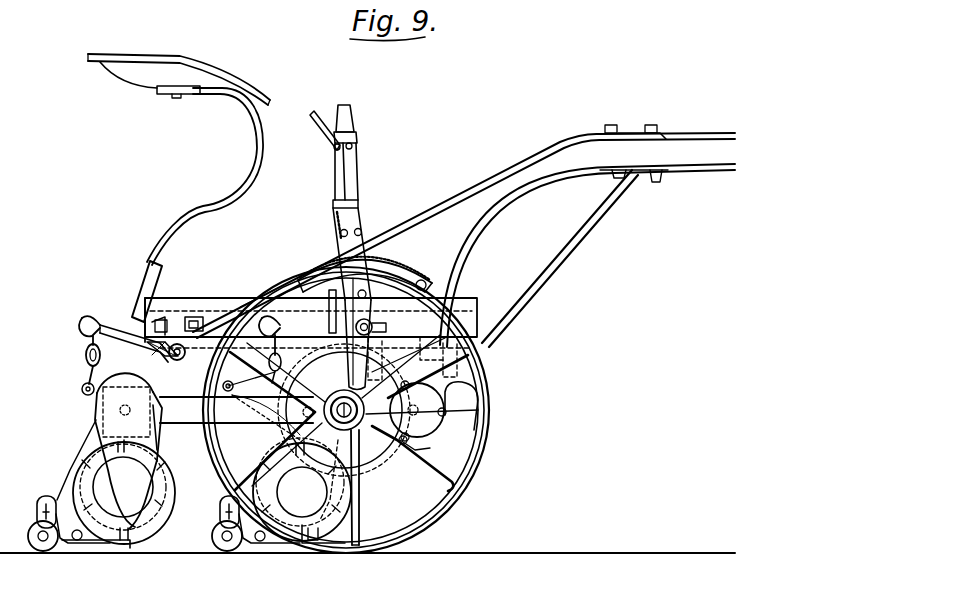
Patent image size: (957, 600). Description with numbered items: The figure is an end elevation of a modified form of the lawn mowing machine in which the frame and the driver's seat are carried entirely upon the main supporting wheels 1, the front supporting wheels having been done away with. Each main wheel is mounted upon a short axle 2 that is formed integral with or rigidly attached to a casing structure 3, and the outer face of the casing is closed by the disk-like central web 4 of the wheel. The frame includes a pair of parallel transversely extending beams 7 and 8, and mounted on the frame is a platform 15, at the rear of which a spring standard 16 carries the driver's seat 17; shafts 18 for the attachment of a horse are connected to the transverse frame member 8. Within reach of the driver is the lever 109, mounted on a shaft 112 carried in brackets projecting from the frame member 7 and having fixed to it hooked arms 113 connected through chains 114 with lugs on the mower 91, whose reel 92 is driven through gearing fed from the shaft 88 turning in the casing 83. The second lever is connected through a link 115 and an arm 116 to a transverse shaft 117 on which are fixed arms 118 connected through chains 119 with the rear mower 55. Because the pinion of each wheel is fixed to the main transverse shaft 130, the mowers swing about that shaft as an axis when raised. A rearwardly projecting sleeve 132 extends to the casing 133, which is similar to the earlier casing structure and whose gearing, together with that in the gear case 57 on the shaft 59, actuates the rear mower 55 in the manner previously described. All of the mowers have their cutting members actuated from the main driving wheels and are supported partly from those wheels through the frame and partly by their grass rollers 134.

The main supporting wheels 1 is at (481, 430).
The short axles 2 is at (356, 448).
The casing structures 3 is at (386, 368).
The disk-like central webs 4 is at (392, 462).
The transverse beam 7 is at (344, 410).
The transverse beam 8 is at (458, 395).
The platform 15 is at (195, 297).
The spring standard 16 is at (203, 200).
The driver's seat 17 is at (137, 73).
The shafts 18 is at (700, 157).
The mower 55 is at (112, 460).
The gear case 57 is at (157, 446).
The shaft 59 is at (118, 410).
The casing 83 is at (282, 430).
The shaft 88 is at (302, 412).
The mower 91 is at (322, 548).
The reel 92 is at (363, 497).
The lever 109 is at (355, 124).
The shaft 112 is at (388, 328).
The hooked arms 113 is at (292, 322).
The chains 114 is at (283, 350).
The link 115 is at (214, 306).
The arm 116 is at (162, 352).
The transverse shaft 117 is at (176, 361).
The arms 118 is at (140, 343).
The chains 119 is at (84, 363).
The main transverse shaft 130 is at (434, 413).
The rearwardly projecting sleeve 132 is at (228, 405).
The casing 133 is at (82, 395).
The grass rollers 134 is at (46, 550).